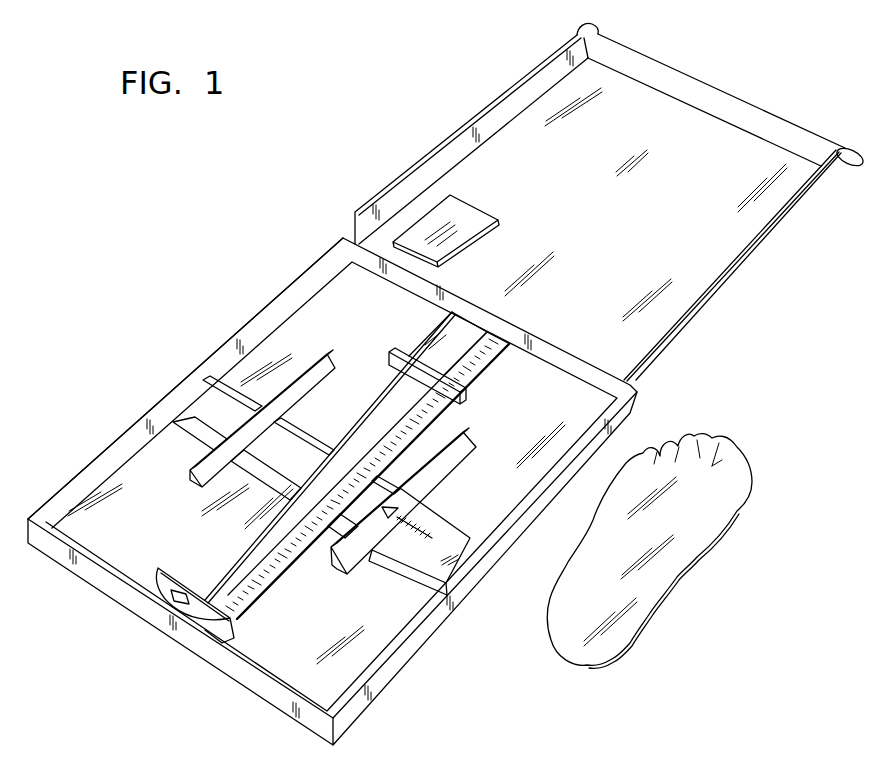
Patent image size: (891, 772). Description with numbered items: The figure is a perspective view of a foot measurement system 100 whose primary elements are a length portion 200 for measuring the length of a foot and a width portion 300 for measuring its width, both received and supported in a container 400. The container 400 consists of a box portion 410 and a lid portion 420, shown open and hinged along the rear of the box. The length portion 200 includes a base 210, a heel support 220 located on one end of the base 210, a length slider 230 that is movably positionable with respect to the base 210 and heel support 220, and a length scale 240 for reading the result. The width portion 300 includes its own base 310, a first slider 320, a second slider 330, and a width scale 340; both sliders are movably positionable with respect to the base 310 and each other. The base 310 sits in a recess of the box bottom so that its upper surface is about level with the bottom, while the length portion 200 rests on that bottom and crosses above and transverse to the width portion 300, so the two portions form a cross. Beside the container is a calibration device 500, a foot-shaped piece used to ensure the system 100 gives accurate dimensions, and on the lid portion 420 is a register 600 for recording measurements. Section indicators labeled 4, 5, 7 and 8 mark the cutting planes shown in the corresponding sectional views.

The foot measurement system 100 is at (233, 277).
The length portion 200 is at (488, 371).
The base 210 is at (432, 337).
The heel support 220 is at (163, 566).
The length slider 230 is at (473, 393).
The length scale 240 is at (253, 587).
The width portion 300 is at (466, 534).
The base 310 is at (393, 558).
The first slider 320 is at (297, 390).
The second slider 330 is at (457, 466).
The width scale 340 is at (417, 530).
The container 400 is at (108, 442).
The box portion 410 is at (180, 384).
The lid portion 420 is at (420, 161).
The calibration device 500 is at (696, 559).
The register 600 is at (483, 210).
The section line 4- 4 is at (377, 348).
The section line 5- 5 is at (201, 558).
The section line 7- 7 is at (318, 348).
The section line 8- 8 is at (452, 410).